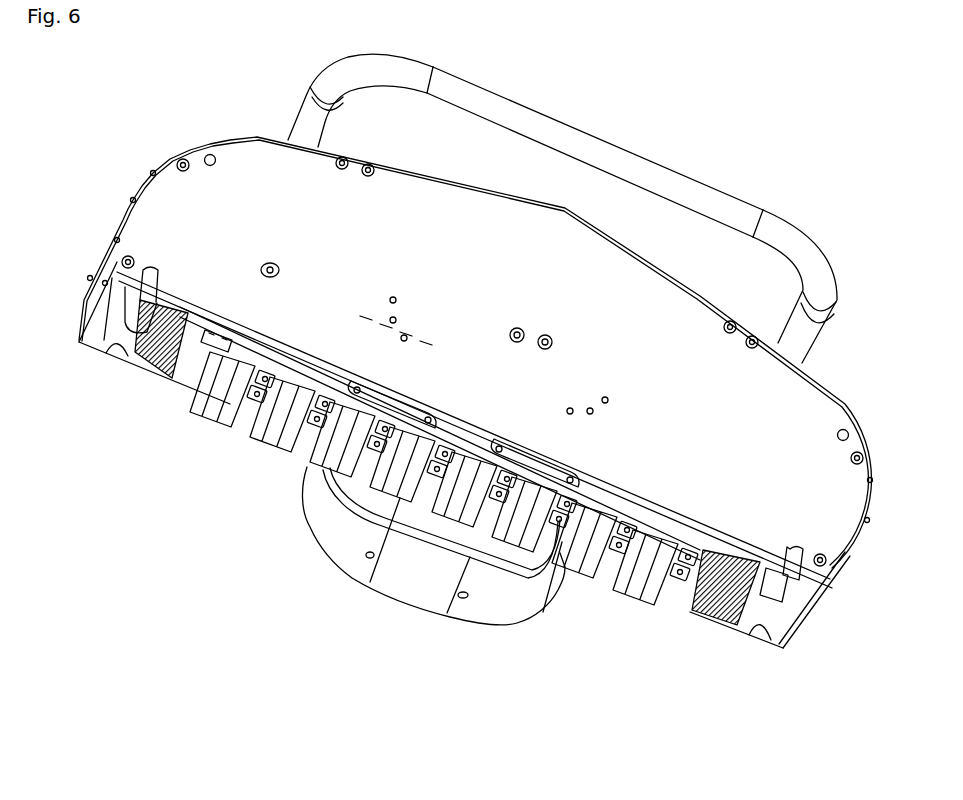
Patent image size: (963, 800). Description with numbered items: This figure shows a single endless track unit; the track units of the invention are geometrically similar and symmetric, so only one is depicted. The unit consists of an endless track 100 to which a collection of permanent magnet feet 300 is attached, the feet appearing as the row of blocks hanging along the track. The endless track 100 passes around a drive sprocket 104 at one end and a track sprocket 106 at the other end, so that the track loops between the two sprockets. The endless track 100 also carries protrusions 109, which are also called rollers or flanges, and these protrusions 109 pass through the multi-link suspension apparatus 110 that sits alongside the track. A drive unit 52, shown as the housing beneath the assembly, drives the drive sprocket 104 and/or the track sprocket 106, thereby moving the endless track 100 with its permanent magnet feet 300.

The drive unit 52 is at (517, 638).
The endless track 100 is at (687, 587).
The drive sprocket 104 is at (724, 540).
The track sprocket 106 is at (223, 327).
The protrusions 109 is at (205, 330).
The multi-link suspension apparatus 110 is at (520, 472).
The permanent magnet feet 300 is at (279, 453).